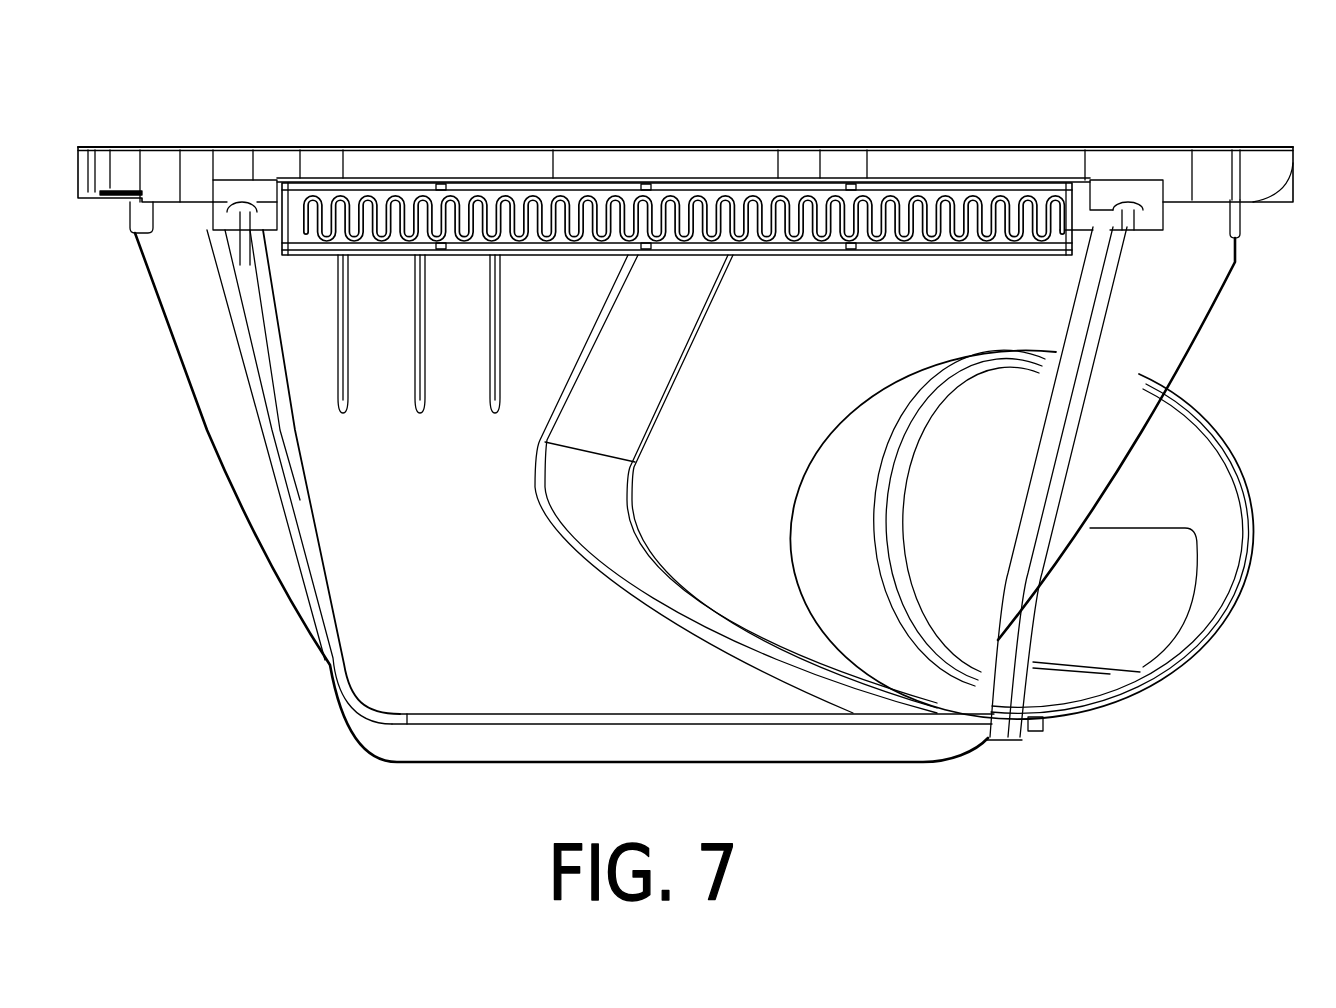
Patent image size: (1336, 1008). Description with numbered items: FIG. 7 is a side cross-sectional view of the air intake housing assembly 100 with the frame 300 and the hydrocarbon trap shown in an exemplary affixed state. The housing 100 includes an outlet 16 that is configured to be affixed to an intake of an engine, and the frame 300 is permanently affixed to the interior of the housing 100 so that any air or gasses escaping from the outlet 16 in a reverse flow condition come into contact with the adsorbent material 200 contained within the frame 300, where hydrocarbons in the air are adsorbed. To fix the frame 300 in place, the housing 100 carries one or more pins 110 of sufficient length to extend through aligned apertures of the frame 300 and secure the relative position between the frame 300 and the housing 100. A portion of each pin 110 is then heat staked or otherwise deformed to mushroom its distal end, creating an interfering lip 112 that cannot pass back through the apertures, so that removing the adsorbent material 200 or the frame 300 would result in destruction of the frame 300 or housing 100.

The outlet 16 is at (1115, 675).
The housing assembly 100 is at (303, 556).
The pin 110 is at (243, 250).
The interfering lip 112 is at (243, 200).
The adsorbent material 200 is at (585, 183).
The frame 300 is at (1086, 183).